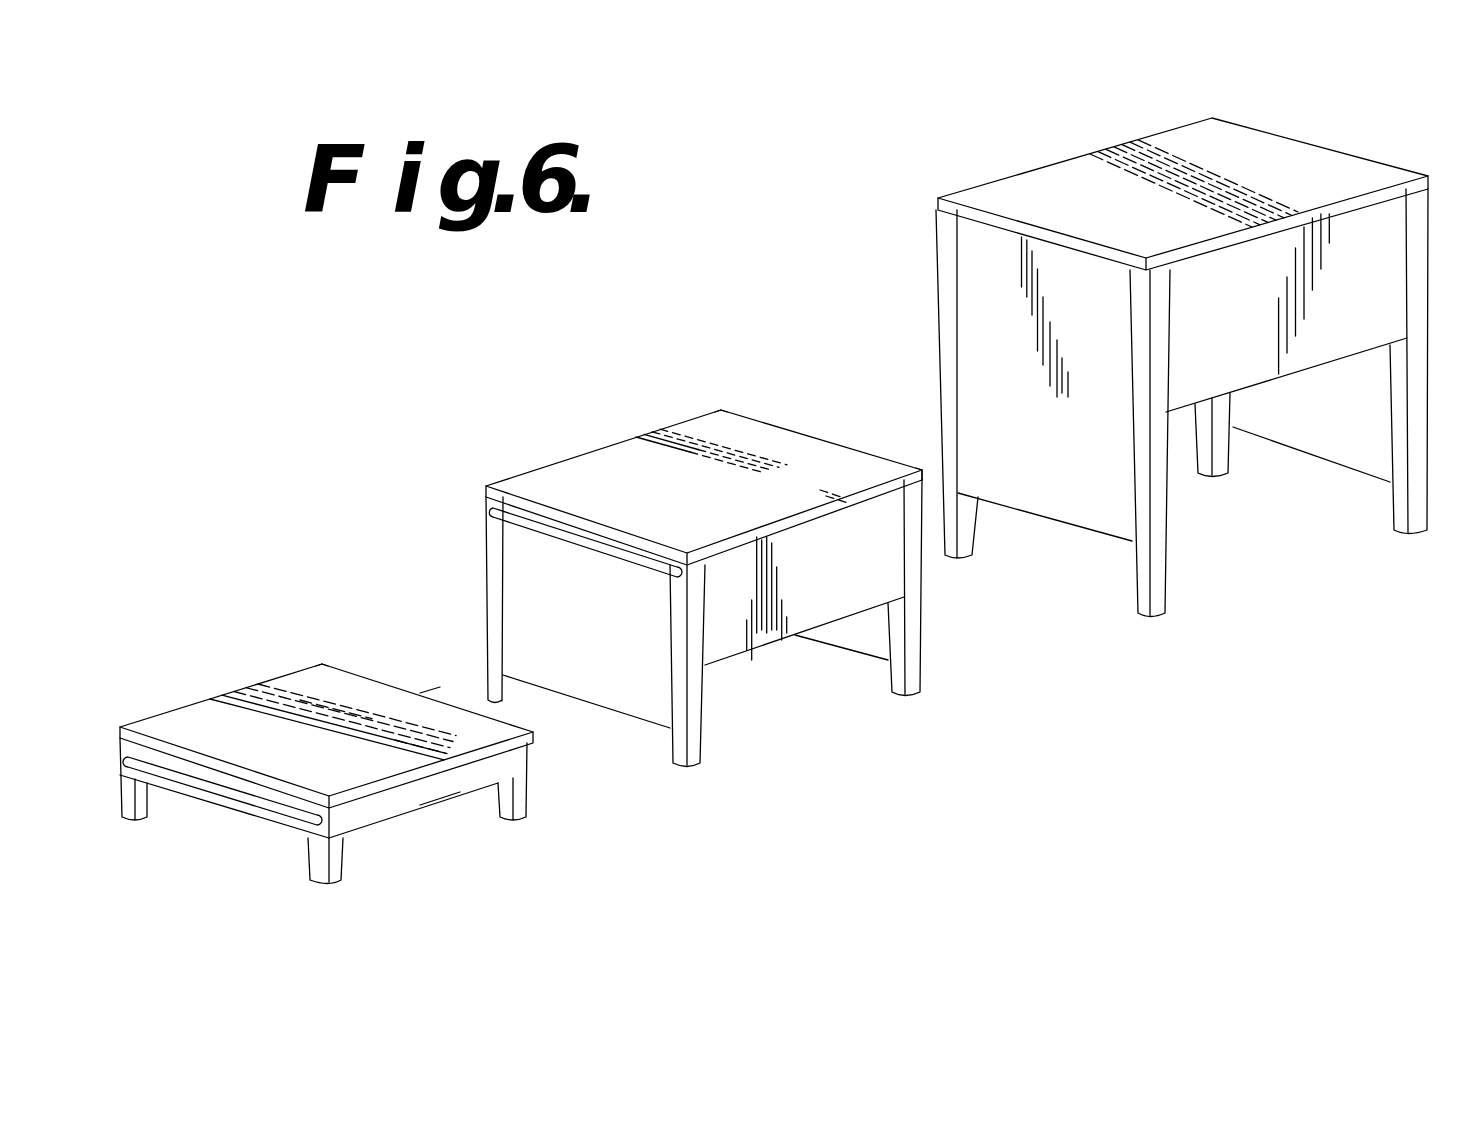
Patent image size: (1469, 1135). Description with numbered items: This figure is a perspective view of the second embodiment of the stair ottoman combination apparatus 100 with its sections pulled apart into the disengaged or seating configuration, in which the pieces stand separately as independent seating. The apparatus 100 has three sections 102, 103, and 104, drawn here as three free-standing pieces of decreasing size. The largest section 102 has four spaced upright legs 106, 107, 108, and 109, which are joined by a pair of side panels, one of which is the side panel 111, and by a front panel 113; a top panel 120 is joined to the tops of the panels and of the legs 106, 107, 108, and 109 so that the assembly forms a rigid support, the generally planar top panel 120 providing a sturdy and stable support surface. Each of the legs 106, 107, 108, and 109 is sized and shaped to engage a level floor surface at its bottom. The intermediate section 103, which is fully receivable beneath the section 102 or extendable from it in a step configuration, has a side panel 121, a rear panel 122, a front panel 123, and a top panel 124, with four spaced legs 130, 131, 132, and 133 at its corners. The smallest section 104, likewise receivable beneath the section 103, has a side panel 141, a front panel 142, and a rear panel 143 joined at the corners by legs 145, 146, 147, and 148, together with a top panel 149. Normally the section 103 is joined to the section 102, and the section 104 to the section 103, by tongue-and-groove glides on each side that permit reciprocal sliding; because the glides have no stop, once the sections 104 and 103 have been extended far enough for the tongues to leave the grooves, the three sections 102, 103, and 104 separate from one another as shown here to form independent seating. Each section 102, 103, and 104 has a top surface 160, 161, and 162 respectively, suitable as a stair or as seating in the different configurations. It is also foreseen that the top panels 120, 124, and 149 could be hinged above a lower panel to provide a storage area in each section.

The stair ottoman combination apparatus 100 is at (360, 780).
The section 102 is at (1146, 333).
The section 103 is at (693, 547).
The section 104 is at (185, 713).
The leg 106 is at (1170, 527).
The leg 107 is at (1430, 447).
The leg 108 is at (1232, 413).
The leg 109 is at (978, 530).
The side panel 111 is at (1345, 332).
The front panel 113 is at (984, 267).
The top panel 120 is at (1268, 147).
The side panel 121 is at (620, 693).
The rear panel 122 is at (883, 460).
The front panel 123 is at (823, 625).
The top panel 124 is at (763, 442).
The leg 130 is at (925, 603).
The leg 131 is at (725, 408).
The leg 132 is at (485, 560).
The leg 133 is at (705, 705).
The side panel 141 is at (290, 820).
The front panel 142 is at (440, 795).
The rear panel 143 is at (430, 690).
The leg 145 is at (532, 787).
The leg 146 is at (335, 660).
The leg 147 is at (150, 797).
The leg 148 is at (340, 857).
The top panel 149 is at (485, 725).
The top surface 160 is at (1185, 143).
The top surface 161 is at (683, 435).
The top surface 162 is at (160, 722).